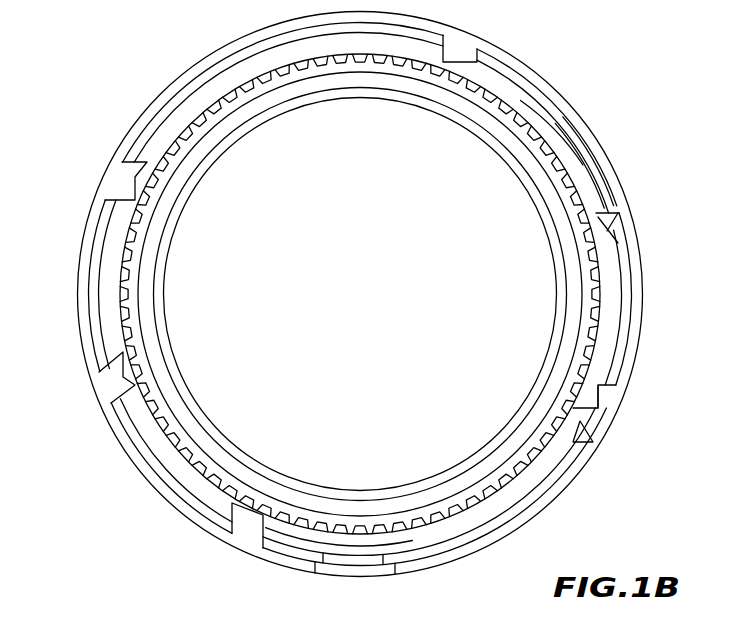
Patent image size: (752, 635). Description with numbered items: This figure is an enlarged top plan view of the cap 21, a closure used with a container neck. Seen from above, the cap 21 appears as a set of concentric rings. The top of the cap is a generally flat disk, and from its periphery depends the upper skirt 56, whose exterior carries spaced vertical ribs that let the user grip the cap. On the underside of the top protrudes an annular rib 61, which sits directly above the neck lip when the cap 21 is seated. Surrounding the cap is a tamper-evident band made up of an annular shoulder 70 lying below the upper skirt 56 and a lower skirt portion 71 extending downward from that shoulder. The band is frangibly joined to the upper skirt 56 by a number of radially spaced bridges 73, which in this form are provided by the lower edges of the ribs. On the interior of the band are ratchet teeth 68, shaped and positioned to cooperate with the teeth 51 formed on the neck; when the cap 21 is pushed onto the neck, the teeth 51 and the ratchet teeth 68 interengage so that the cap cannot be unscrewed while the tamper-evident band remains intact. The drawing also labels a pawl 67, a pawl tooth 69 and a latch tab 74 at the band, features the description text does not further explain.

The cap 21 is at (185, 520).
The teeth 51 is at (369, 257).
The upper skirt 56 is at (523, 132).
The annular rib 61 is at (558, 248).
The pawl 67 is at (600, 400).
The ratchet teeth 68 is at (124, 183).
The pawl tooth 69 is at (610, 234).
The annular shoulder 70 is at (588, 182).
The lower skirt portion 71 is at (598, 158).
The bridges 73 is at (545, 128).
The latch tab 74 is at (382, 573).